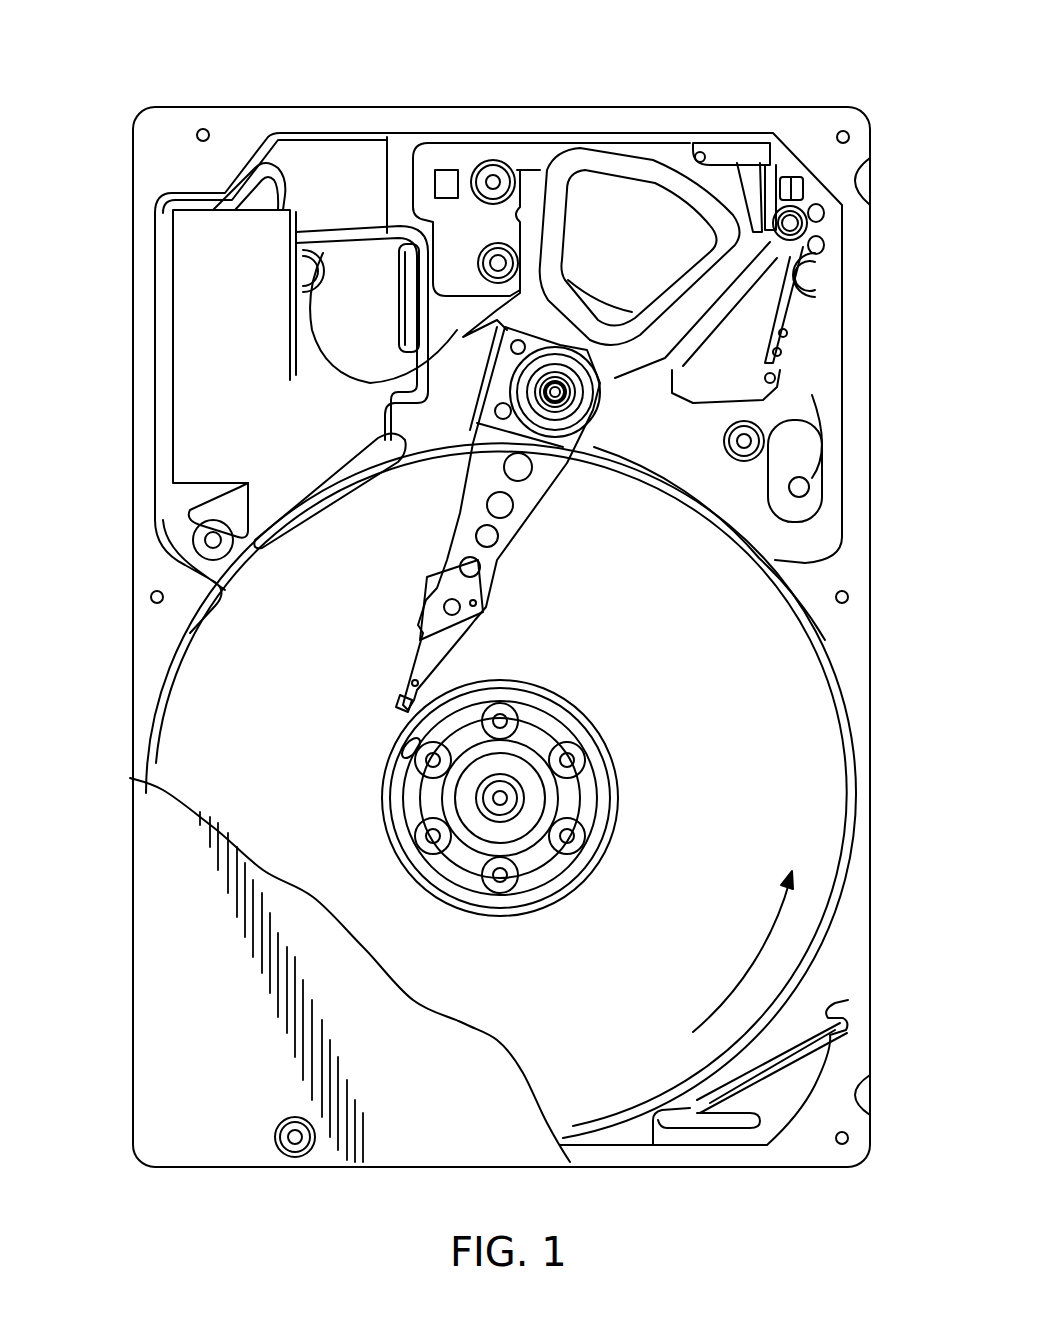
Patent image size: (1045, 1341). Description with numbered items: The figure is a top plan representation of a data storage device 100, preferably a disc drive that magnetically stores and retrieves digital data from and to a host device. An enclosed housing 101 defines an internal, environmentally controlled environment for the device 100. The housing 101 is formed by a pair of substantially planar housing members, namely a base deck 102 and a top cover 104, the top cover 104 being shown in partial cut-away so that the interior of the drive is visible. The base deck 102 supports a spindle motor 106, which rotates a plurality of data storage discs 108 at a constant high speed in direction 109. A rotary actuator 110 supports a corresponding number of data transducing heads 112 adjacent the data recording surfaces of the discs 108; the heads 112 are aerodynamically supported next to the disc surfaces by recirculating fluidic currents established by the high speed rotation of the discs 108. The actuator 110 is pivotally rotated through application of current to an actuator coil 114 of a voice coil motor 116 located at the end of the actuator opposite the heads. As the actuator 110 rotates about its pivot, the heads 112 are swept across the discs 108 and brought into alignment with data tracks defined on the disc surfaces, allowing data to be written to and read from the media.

The data storage device 100 is at (212, 87).
The enclosed housing 101 is at (134, 260).
The base deck 102 is at (400, 442).
The top cover 104 is at (160, 840).
The spindle motor 106 is at (511, 783).
The data storage discs 108 is at (785, 787).
The direction of disc rotation 109 is at (749, 970).
The rotary actuator 110 is at (556, 434).
The data transducing heads 112 is at (405, 692).
The actuator coil 114 is at (620, 170).
The voice coil motor 116 is at (673, 172).